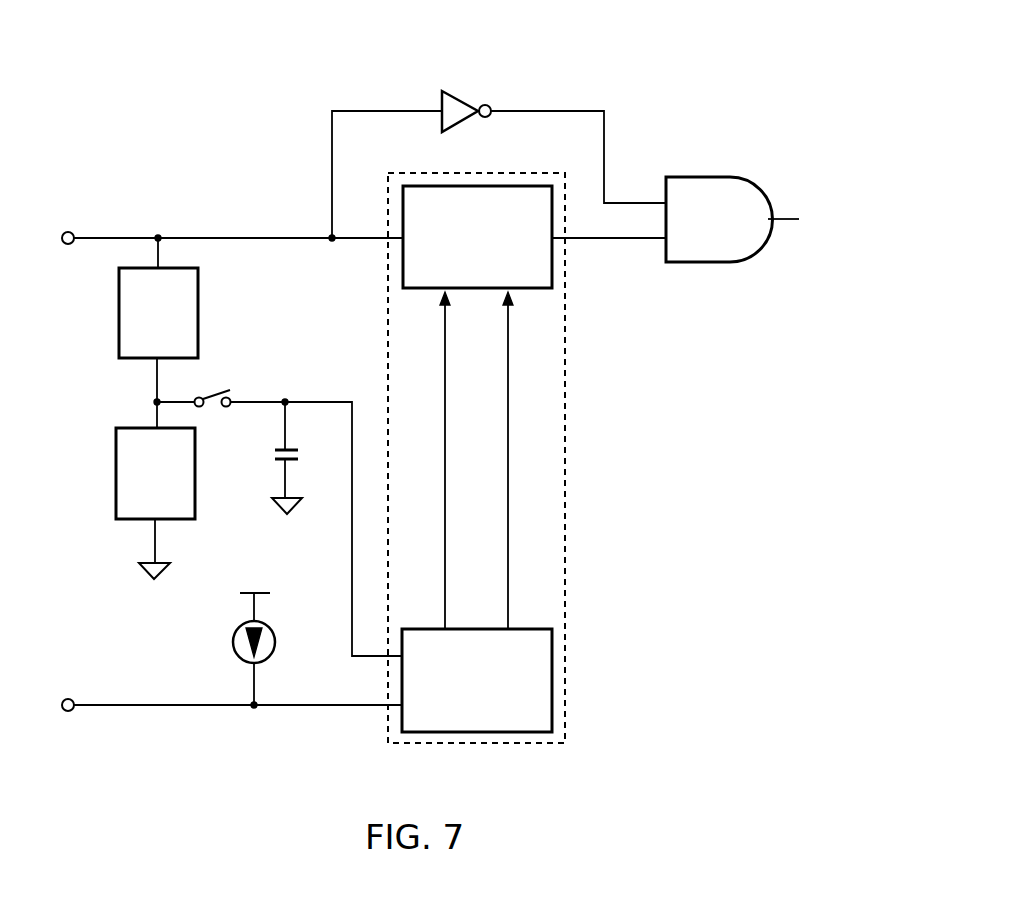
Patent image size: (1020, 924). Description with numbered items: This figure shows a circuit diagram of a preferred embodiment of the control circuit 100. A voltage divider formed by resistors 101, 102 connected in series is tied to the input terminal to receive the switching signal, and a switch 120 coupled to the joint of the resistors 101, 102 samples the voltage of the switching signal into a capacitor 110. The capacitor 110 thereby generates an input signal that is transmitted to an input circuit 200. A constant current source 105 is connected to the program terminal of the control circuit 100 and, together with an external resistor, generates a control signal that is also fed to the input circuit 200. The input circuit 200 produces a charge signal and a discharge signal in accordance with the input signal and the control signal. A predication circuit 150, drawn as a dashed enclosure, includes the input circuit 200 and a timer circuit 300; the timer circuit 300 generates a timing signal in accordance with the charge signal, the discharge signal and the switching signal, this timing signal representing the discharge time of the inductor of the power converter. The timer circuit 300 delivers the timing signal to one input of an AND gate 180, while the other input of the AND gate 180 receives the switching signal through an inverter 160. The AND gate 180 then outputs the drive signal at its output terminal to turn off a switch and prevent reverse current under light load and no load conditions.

The control circuit 100 is at (790, 16).
The resistor 101 is at (119, 316).
The resistor 102 is at (116, 476).
The constant current source 105 is at (233, 642).
The capacitor 110 is at (274, 464).
The switch 120 is at (222, 392).
The predication circuit 150 is at (565, 416).
The inverter 160 is at (461, 92).
The AND gate 180 is at (744, 262).
The input circuit 200 is at (530, 629).
The timer circuit 300 is at (530, 291).